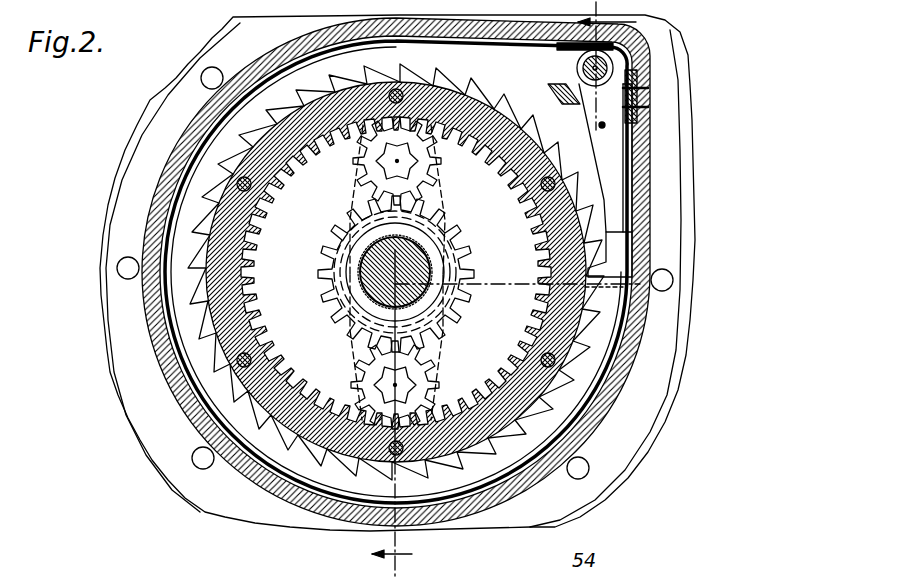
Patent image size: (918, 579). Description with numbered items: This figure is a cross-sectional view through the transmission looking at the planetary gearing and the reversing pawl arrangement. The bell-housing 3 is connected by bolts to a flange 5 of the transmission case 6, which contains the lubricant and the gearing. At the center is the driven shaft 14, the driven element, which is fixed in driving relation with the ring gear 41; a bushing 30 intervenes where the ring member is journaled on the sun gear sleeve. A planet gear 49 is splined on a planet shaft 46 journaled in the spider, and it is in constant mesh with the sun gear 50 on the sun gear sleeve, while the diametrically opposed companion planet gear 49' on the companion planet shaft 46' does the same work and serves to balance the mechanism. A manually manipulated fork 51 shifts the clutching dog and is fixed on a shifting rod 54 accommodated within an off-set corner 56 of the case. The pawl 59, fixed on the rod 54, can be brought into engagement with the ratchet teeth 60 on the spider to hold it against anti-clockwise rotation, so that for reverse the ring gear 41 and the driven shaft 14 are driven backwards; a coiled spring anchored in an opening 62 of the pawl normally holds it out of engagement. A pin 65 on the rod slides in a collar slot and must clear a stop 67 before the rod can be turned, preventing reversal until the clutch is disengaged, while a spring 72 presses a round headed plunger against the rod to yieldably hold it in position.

The bell-housing 3 is at (107, 379).
The flange 5 is at (672, 228).
The transmission case 6 is at (653, 173).
The driven shaft 14 is at (383, 257).
The bushing 30 is at (360, 276).
The ring gear 41 is at (556, 230).
The planet shaft 46 is at (417, 161).
The planet shaft 46' is at (418, 385).
The planet gear 49 is at (377, 200).
The companion planet gear 49' is at (377, 347).
The sun gear 50 is at (446, 223).
The fork 51 is at (552, 92).
The shifting rod 54 is at (612, 48).
The off-set corner 56 is at (650, 107).
The pawl 59 is at (630, 150).
The ratchet teeth 60 is at (587, 323).
The opening 62 is at (606, 126).
The pin 65 is at (625, 66).
The stop 67 is at (648, 88).
The spring 72 is at (562, 57).